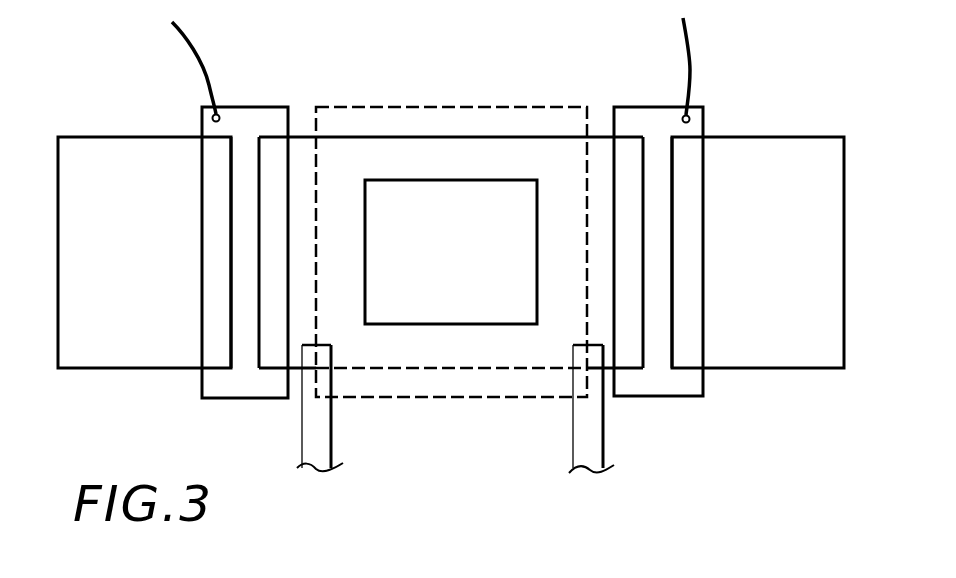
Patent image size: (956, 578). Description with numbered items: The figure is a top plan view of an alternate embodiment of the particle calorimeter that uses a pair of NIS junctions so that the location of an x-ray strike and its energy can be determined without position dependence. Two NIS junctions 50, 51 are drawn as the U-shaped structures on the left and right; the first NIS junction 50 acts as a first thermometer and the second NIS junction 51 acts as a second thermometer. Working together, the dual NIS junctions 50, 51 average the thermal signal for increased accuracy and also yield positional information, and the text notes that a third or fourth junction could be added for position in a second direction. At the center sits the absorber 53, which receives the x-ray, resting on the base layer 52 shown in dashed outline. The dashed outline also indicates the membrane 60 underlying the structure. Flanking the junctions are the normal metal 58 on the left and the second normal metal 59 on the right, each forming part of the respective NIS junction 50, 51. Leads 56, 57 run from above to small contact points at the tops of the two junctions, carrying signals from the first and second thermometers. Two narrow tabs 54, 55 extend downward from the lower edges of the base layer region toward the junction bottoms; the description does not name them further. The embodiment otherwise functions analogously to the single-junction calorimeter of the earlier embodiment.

The NIS junction 50 is at (275, 163).
The NIS junction 51 is at (630, 167).
The base layer 52 is at (477, 150).
The absorber 53 is at (413, 308).
The first tab lead 54 is at (318, 426).
The second tab lead 55 is at (593, 437).
The lead 56 is at (197, 59).
The lead 57 is at (692, 55).
The normal metal 58 is at (147, 157).
The second normal metal 59 is at (780, 158).
The membrane 60 is at (473, 397).